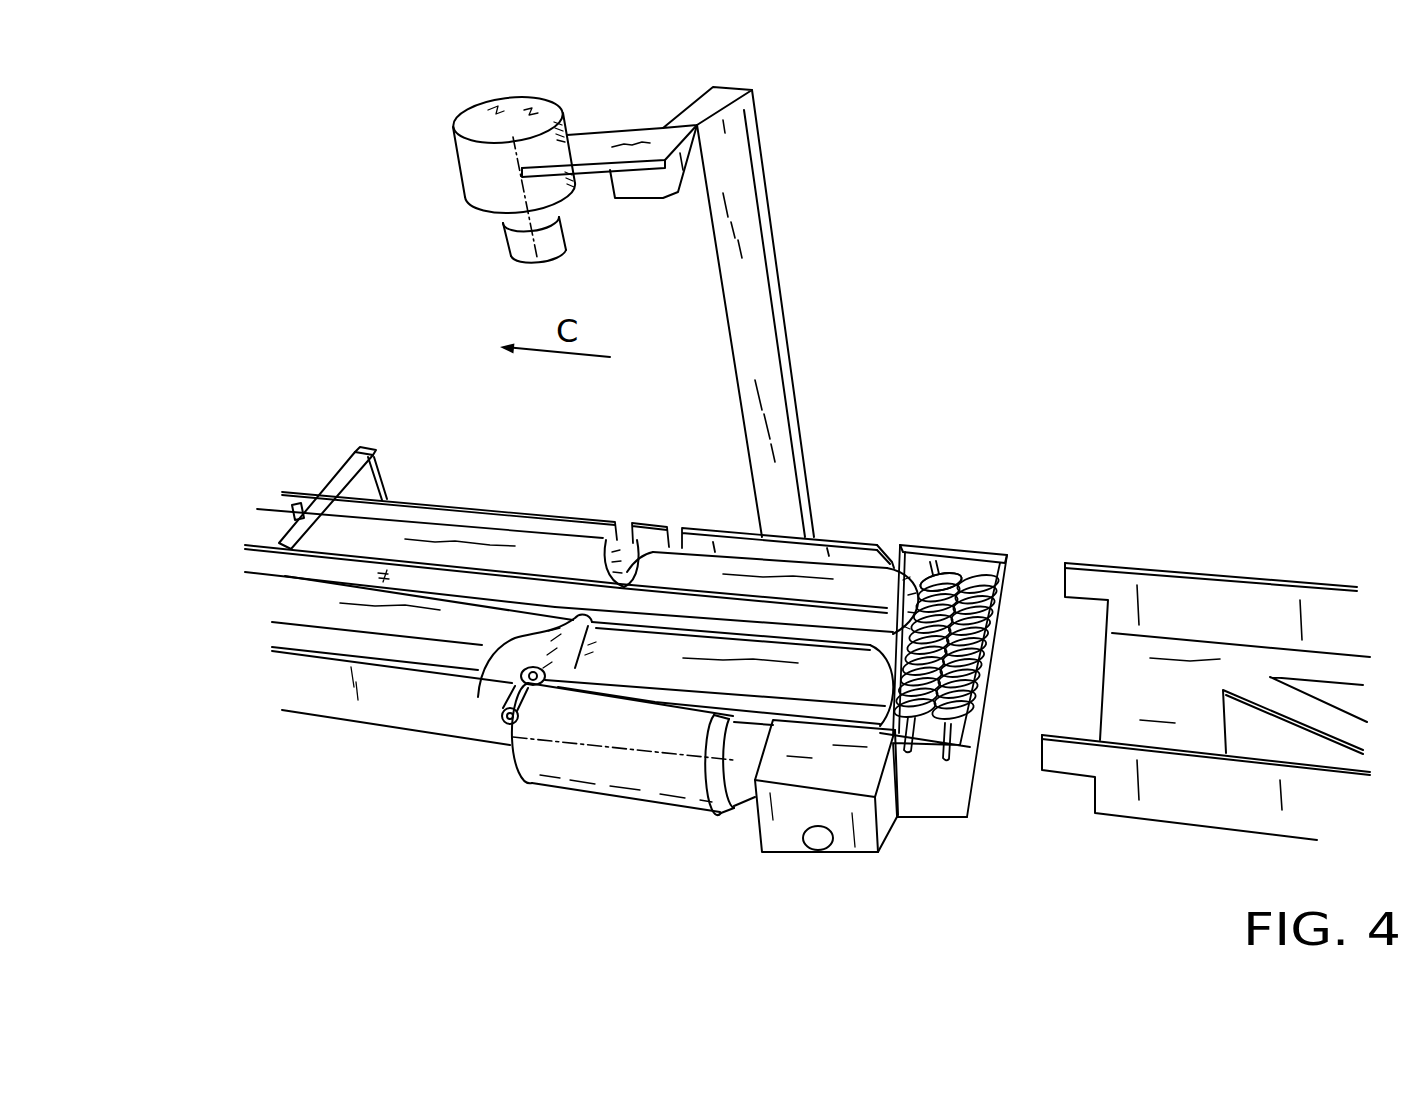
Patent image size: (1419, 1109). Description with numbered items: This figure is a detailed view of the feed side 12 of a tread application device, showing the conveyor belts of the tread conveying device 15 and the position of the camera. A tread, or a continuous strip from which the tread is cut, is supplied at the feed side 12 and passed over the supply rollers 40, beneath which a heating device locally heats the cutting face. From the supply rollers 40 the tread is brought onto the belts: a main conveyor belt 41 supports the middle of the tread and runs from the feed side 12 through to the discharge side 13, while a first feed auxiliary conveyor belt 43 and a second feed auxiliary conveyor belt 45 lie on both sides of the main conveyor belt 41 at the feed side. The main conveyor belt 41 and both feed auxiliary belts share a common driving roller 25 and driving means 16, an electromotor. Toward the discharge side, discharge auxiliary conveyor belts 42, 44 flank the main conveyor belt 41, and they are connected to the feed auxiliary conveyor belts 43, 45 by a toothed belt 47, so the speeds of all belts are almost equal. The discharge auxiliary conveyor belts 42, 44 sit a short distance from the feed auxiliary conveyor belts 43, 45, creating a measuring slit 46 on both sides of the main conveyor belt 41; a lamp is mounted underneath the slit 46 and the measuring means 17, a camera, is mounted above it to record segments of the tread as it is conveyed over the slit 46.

The feed side 12 is at (1116, 470).
The discharge side 13 is at (190, 418).
The tread conveying device 15 is at (448, 418).
The driving means 16 is at (700, 813).
The measuring means 17 is at (487, 171).
The driving roller 25 is at (900, 565).
The supply rollers 40 is at (938, 752).
The main conveyor belt 41 is at (268, 560).
The discharge auxiliary conveyor belt 42 is at (295, 601).
The first feed auxiliary conveyor belt 43 is at (701, 668).
The discharge auxiliary conveyor belt 44 is at (268, 520).
The second feed auxiliary conveyor belt 45 is at (816, 580).
The measuring slit 46 is at (612, 552).
The toothed belt 47 is at (522, 730).